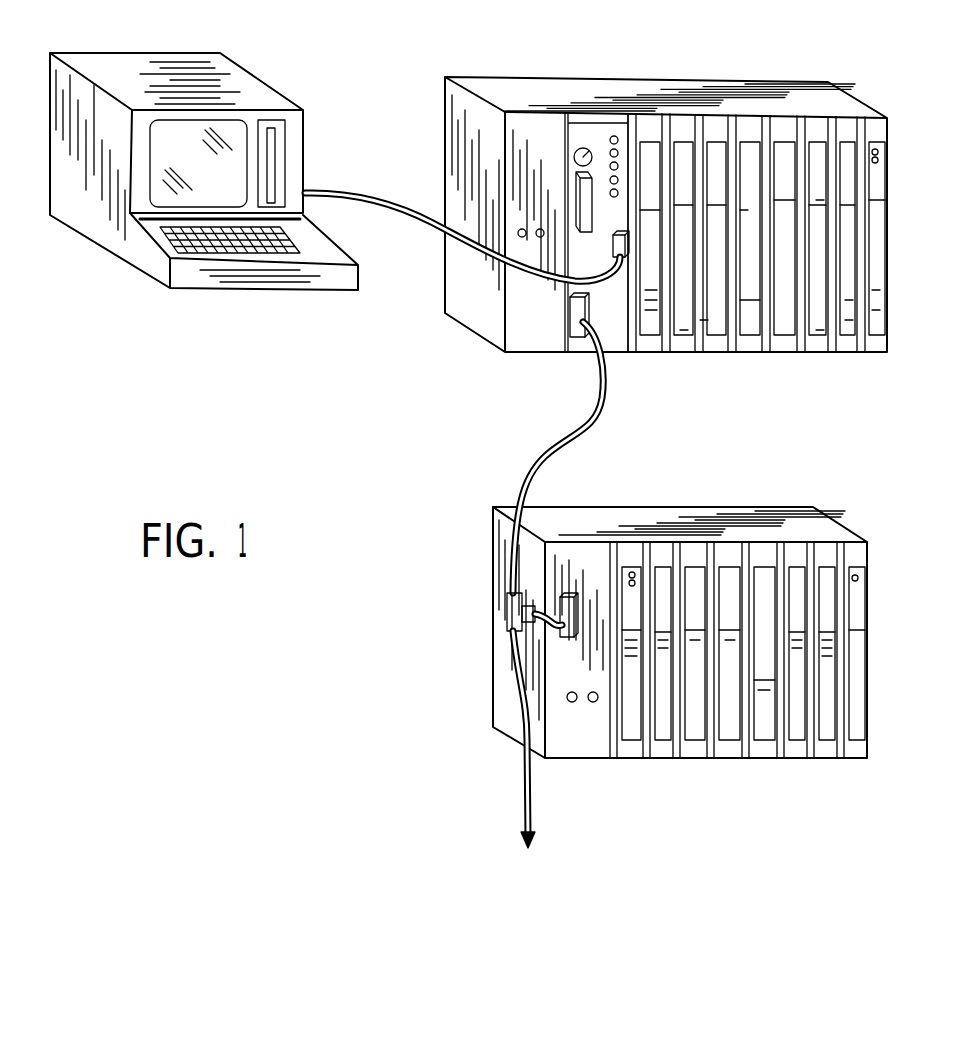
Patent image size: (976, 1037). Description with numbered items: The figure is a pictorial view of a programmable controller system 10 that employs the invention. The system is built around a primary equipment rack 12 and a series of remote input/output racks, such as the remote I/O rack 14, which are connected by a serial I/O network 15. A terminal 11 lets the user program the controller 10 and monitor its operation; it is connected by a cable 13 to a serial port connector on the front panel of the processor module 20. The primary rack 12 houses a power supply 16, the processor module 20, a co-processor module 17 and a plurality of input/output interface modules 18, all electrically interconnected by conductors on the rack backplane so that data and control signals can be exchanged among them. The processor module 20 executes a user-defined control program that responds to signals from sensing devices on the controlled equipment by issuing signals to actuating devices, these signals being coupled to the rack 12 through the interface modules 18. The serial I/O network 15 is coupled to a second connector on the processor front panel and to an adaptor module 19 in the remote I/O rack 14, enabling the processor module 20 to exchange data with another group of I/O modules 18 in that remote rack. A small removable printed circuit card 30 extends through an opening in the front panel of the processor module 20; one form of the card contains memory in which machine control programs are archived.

The programmable controller system 10 is at (410, 354).
The terminal 11 is at (305, 162).
The primary equipment rack 12 is at (666, 416).
The cable 13 is at (425, 220).
The remote input/output rack 14 is at (680, 639).
The serial I/O network 15 is at (572, 437).
The power supply 16 is at (538, 340).
The co-processor module 17 is at (683, 348).
The input/output interface modules 18 is at (663, 352).
The adaptor module 19 is at (572, 757).
The processor module 20 is at (617, 256).
The removable printed circuit card 30 is at (583, 217).